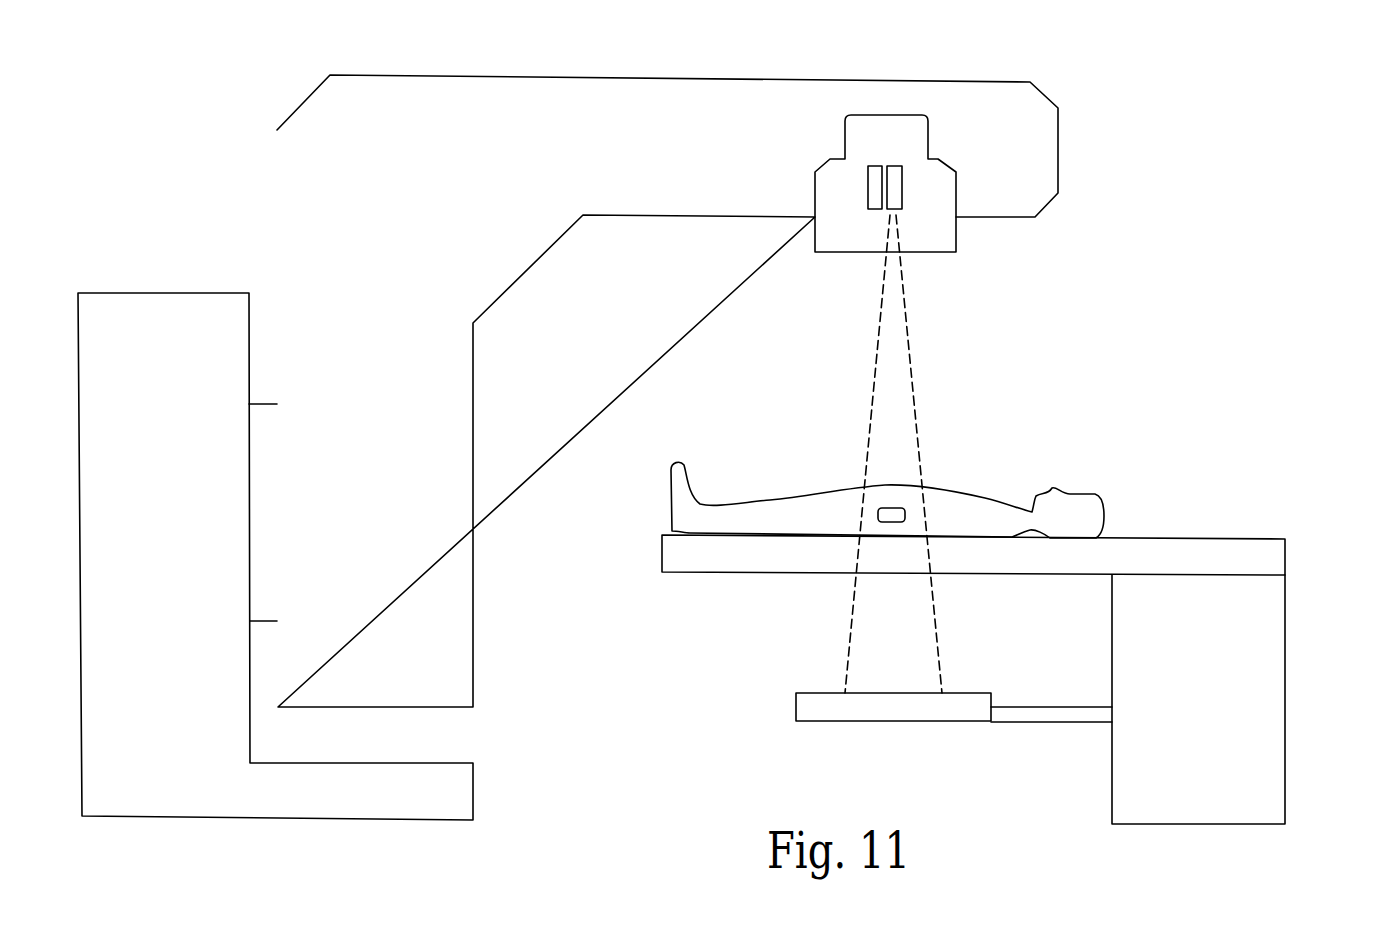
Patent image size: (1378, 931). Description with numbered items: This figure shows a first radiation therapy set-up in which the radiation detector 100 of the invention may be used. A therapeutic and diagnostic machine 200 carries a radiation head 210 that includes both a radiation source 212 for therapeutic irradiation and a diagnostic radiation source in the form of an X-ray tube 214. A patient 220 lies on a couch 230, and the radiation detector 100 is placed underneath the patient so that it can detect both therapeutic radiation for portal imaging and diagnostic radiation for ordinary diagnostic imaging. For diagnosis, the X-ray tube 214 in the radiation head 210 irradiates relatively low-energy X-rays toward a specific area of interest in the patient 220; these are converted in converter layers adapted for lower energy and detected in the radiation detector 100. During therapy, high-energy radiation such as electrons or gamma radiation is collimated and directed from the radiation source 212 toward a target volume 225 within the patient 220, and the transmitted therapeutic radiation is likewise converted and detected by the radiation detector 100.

The therapeutic and diagnostic machine 200 is at (401, 162).
The radiation head 210 is at (888, 123).
The radiation source 212 is at (870, 176).
The X-ray tube 214 is at (893, 177).
The patient 220 is at (1098, 494).
The target volume 225 is at (905, 519).
The couch 230 is at (1286, 563).
The radiation detector 100 is at (958, 707).